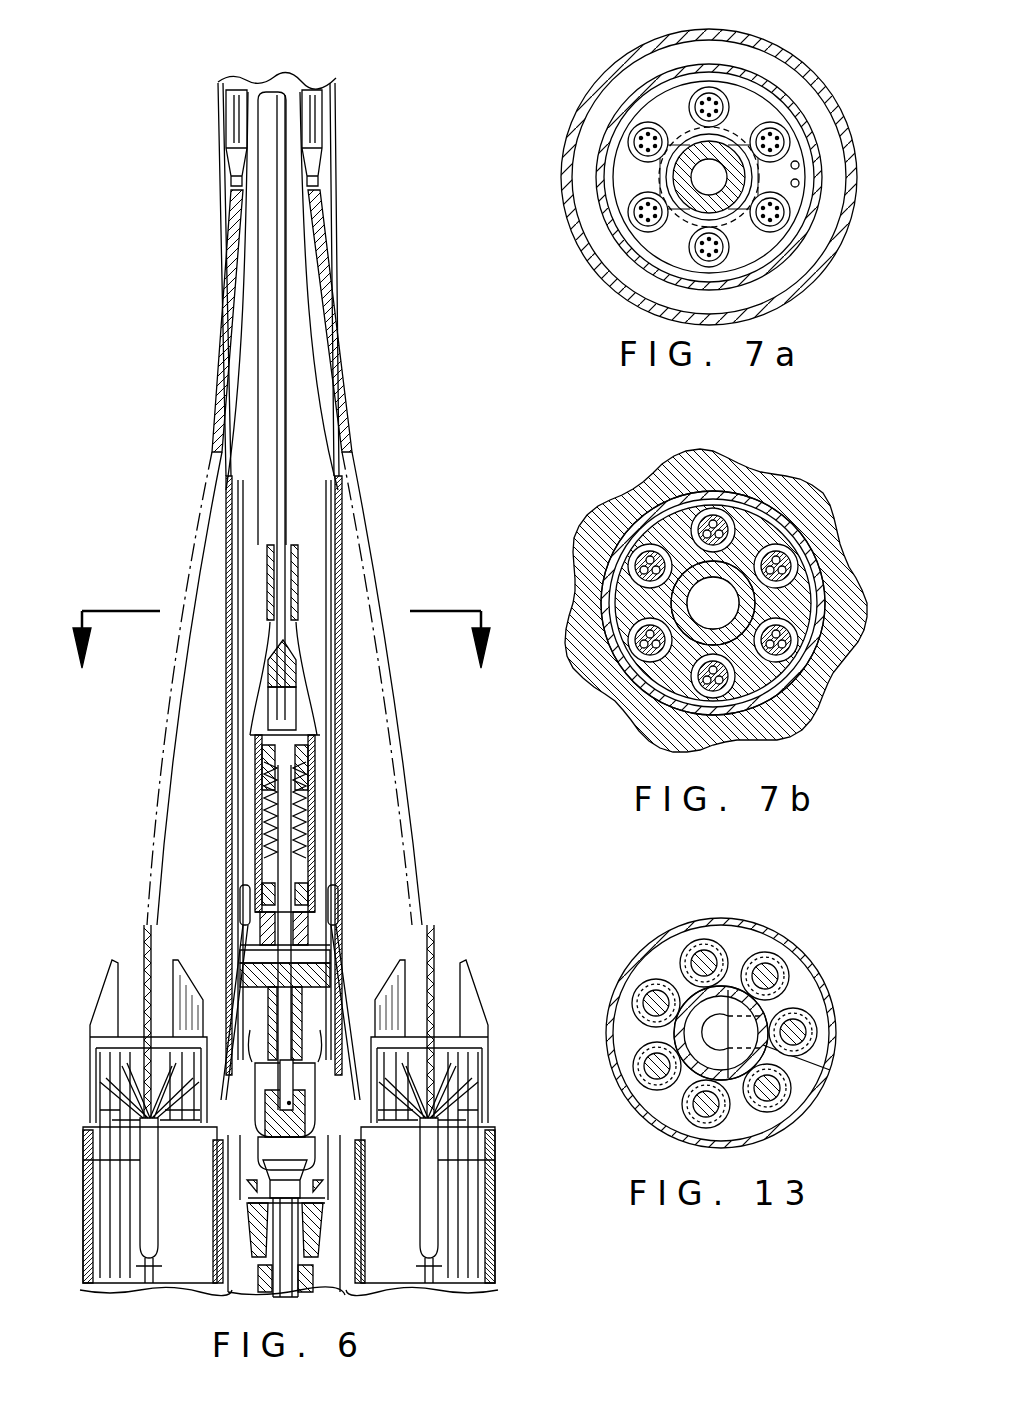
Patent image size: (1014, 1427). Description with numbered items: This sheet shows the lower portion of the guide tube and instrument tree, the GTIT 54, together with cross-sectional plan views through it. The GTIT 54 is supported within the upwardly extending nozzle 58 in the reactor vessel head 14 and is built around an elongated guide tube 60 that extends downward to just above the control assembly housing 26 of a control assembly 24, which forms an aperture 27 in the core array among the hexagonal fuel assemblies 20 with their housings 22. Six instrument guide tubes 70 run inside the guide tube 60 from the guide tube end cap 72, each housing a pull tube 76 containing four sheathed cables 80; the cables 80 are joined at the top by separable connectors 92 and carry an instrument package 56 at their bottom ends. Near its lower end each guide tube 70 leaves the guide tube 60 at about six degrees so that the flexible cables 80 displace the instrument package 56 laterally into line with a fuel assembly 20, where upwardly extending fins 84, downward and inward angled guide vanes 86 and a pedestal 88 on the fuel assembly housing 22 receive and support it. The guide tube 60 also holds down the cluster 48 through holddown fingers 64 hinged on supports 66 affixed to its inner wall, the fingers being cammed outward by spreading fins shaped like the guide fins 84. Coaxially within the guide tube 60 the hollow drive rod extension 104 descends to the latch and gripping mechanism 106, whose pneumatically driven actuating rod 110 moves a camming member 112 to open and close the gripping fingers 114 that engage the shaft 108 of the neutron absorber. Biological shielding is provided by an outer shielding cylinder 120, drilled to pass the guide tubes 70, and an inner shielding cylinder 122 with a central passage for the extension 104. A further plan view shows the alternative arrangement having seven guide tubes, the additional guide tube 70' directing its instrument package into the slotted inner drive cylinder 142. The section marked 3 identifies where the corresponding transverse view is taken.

In FIG. 6, the drive rod extension 104 is at (270, 284).
In FIG. 7A, the drive rod extension 104 is at (655, 265).
In FIG. 7B, the drive rod extension 104 is at (642, 498).
In FIG. 6, the instrument guide tubes 70 is at (277, 291).
In FIG. 13, the instrument guide tubes 70 is at (735, 1025).
In FIG. 13, the additional instrument guide tube 70' is at (827, 1022).
In FIG. 6, the cables 80 is at (224, 458).
In FIG. 6, the guide tube 60 is at (227, 518).
In FIG. 7B, the guide tube 60 is at (772, 500).
In FIG. 13, the guide tube 60 is at (838, 1056).
In FIG. 6, the GTIT 54 is at (224, 591).
In FIG. 6, the section line 3- 3 is at (281, 661).
In FIG. 6, the supports 66 is at (330, 892).
In FIG. 6, the actuating rod 110 is at (240, 902).
In FIG. 6, the holddown fingers 64 is at (236, 928).
In FIG. 6, the camming member 112 is at (240, 995).
In FIG. 6, the latch and gripping mechanism 106 is at (345, 998).
In FIG. 6, the shaft 108 is at (322, 1200).
In FIG. 6, the housing 26 is at (330, 1292).
In FIG. 6, the aperture 27 is at (348, 1248).
In FIG. 6, the cluster 48 is at (78, 1020).
In FIG. 6, the fins 84 is at (114, 964).
In FIG. 6, the gripping fingers 114 is at (140, 1100).
In FIG. 6, the guide vanes 86 is at (118, 1110).
In FIG. 6, the instrument package 56 is at (143, 1203).
In FIG. 6, the fuel assemblies 20 is at (86, 1253).
In FIG. 6, the housings 22 is at (90, 1283).
In FIG. 6, the pedestal 88 is at (144, 1275).
In FIG. 6, the control assemblies 24 is at (455, 1263).
In FIG. 7A, the nozzle 58 is at (710, 172).
In FIG. 7A, the guide tube end cap 72 is at (668, 180).
In FIG. 7A, the separable connectors 92 is at (663, 125).
In FIG. 7B, the reactor vessel head 14 is at (804, 710).
In FIG. 7B, the pull tube 76 is at (830, 678).
In FIG. 7B, the outer shielding cylinder 120 is at (770, 528).
In FIG. 7B, the inner shielding cylinder 122 is at (848, 636).
In FIG. 13, the inner drive cylinder 142 is at (770, 1052).